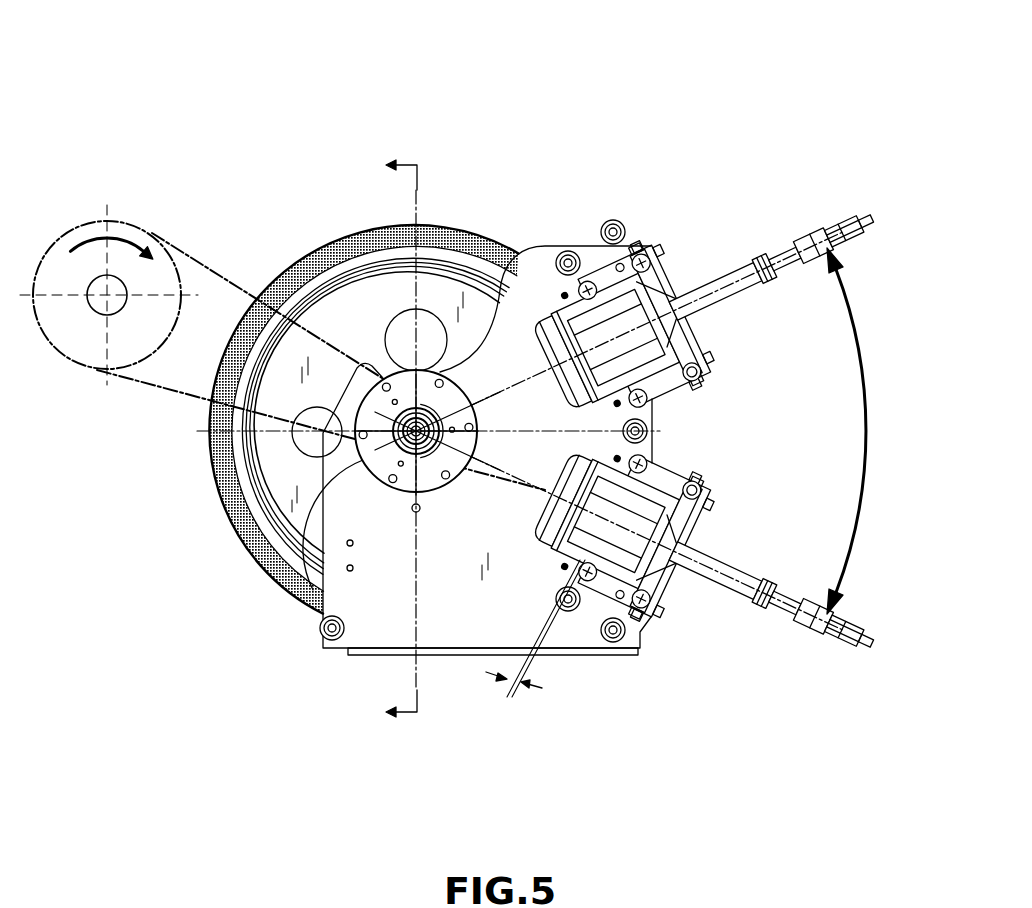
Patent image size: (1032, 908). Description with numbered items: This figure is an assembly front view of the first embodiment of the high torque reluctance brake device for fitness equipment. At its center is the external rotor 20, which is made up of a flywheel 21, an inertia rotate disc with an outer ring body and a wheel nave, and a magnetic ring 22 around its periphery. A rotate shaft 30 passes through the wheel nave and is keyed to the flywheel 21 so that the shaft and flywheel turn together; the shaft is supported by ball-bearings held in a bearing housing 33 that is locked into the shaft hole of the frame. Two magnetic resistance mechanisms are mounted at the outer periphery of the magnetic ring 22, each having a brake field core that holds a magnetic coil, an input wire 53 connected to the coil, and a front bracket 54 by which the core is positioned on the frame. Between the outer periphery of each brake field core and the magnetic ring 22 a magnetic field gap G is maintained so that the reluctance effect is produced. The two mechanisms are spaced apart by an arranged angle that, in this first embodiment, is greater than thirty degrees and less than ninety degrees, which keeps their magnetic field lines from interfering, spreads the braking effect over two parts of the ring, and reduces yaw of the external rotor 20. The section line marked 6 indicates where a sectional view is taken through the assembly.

The external rotor 20 is at (378, 354).
The flywheel 21 is at (443, 253).
The magnetic ring 22 is at (483, 245).
The rotate shaft 30 is at (300, 587).
The bearing housing 33 is at (252, 552).
The input wire 53 is at (878, 222).
The front bracket 54 is at (667, 382).
The section line 6- 6 is at (387, 442).
The magnetic field gap G is at (535, 632).